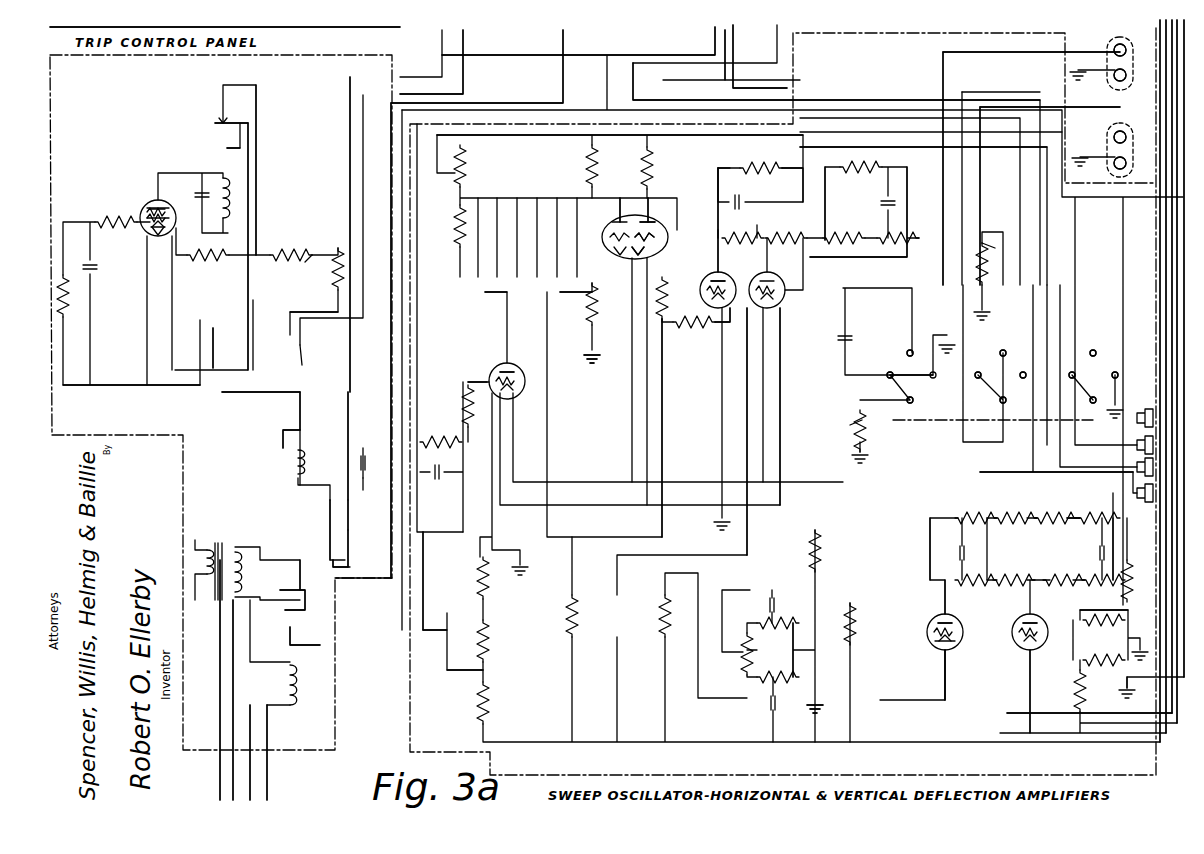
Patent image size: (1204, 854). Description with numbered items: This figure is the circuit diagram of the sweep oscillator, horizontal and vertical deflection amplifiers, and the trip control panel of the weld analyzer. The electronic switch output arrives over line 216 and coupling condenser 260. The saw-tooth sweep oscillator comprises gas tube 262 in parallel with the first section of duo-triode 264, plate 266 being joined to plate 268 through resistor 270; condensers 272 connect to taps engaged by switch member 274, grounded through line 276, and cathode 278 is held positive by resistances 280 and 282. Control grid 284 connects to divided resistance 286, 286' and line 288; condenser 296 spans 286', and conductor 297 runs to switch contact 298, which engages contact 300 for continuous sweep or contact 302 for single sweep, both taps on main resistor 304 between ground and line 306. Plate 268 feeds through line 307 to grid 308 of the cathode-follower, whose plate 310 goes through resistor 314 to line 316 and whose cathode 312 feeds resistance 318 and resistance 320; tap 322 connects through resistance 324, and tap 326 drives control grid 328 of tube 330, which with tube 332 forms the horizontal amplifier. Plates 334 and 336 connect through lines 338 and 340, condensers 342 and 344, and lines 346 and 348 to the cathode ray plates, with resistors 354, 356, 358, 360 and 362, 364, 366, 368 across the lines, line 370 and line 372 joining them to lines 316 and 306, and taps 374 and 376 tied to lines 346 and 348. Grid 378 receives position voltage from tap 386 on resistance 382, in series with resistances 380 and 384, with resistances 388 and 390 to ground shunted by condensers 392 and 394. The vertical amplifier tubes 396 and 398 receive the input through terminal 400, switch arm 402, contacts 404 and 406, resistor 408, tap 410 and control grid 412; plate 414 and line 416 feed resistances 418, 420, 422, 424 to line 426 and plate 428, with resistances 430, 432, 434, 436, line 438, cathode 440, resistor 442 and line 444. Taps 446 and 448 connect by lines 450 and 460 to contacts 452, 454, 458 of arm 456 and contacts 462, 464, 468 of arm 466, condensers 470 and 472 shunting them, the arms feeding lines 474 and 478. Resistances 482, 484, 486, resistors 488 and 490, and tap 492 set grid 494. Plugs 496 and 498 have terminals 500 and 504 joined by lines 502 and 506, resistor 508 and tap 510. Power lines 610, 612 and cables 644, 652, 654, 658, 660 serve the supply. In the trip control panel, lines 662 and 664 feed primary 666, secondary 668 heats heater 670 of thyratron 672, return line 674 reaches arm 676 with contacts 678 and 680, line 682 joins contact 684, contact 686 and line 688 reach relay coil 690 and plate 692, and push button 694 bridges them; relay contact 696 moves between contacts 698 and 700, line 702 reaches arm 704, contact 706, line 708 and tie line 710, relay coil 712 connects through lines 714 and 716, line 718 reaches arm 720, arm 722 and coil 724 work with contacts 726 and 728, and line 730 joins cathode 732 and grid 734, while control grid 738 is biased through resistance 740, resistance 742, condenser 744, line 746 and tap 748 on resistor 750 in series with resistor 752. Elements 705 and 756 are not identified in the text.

The line 216 is at (275, 27).
The coupling condenser 260 is at (850, 335).
The gas tube 262 is at (500, 370).
The duo-triode 264 is at (650, 215).
The plate 266 is at (527, 381).
The plate 268 is at (620, 215).
The resistor 270 is at (460, 230).
The condensers 272 is at (470, 165).
The variable position switch member 274 is at (490, 295).
The line 276 is at (560, 295).
The cathode 278 is at (593, 305).
The resistance 280 is at (590, 320).
The resistance 282 is at (590, 170).
The control grid 284 is at (487, 381).
The divided resistance 286 is at (458, 390).
The divided resistance portion 286' is at (441, 427).
The line 288 is at (565, 42).
The condenser 296 is at (436, 480).
The conductor 297 is at (423, 548).
The movable switch contact 298 is at (460, 660).
The stationary contact 300 is at (447, 625).
The stationary contact 302 is at (460, 670).
The main resistor 304 is at (485, 660).
The line 306 is at (498, 742).
The line 307 is at (668, 237).
The grid 308 is at (660, 240).
The plate 310 is at (656, 222).
The cathode 312 is at (650, 252).
The resistor 314 is at (645, 165).
The line 316 is at (660, 135).
The resistance 318 is at (663, 340).
The resistance 320 is at (570, 620).
The adjustable tap 322 is at (695, 325).
The resistance 324 is at (722, 325).
The adjustable tap 326 is at (690, 312).
The control grid 328 is at (705, 290).
The tube 330 is at (720, 255).
The tube 332 is at (775, 320).
The plate 334 is at (722, 280).
The plate 336 is at (785, 282).
The line 338 is at (716, 215).
The line 340 is at (910, 147).
The condenser 342 is at (735, 200).
The condenser 344 is at (888, 198).
The line 346 is at (712, 45).
The line 348 is at (706, 58).
The resistor 354 is at (728, 168).
The resistor 356 is at (758, 168).
The resistor 358 is at (825, 190).
The resistor 360 is at (880, 167).
The resistance 362 is at (745, 238).
The resistance 364 is at (815, 226).
The resistance 366 is at (845, 238).
The resistance 368 is at (880, 257).
The conductive line 370 is at (803, 160).
The line 372 is at (812, 712).
The adjustable tap 374 is at (758, 230).
The adjustable tap 376 is at (890, 238).
The grid 378 is at (748, 312).
The resistance 380 is at (812, 548).
The resistance 382 is at (775, 628).
The resistance 384 is at (663, 640).
The adjustable tap 386 is at (745, 655).
The resistance 388 is at (793, 630).
The resistance 390 is at (780, 675).
The shunt condenser 392 is at (770, 598).
The shunt condenser 394 is at (770, 708).
The tube 396 is at (935, 650).
The tube 398 is at (1032, 665).
The stationary terminal 400 is at (900, 380).
The movable switch arm 402 is at (913, 403).
The contact 404 is at (906, 353).
The contact 406 is at (892, 367).
The resistor 408 is at (863, 430).
The variable tap 410 is at (852, 422).
The control grid 412 is at (935, 632).
The plate 414 is at (945, 620).
The line 416 is at (945, 600).
The resistance 418 is at (945, 580).
The resistance 420 is at (960, 642).
The resistance 422 is at (1020, 580).
The resistance 424 is at (1114, 560).
The line 426 is at (1095, 582).
The plate 428 is at (1032, 622).
The resistance 430 is at (965, 515).
The resistance 432 is at (1000, 515).
The resistance 434 is at (1045, 515).
The resistance 436 is at (1098, 515).
The line 438 is at (1025, 450).
The cathode 440 is at (947, 660).
The resistor 442 is at (850, 600).
The line 444 is at (1005, 725).
The adjustable tap 446 is at (980, 582).
The adjustable tap 448 is at (1072, 566).
The line 450 is at (988, 540).
The stationary switch contact 452 is at (978, 372).
The stationary switch contact 454 is at (1000, 353).
The movable switch arm 456 is at (1004, 397).
The stationary contact 458 is at (1022, 370).
The line 460 is at (1080, 520).
The stationary contact 462 is at (1072, 372).
The stationary contact 464 is at (1093, 350).
The movable switch arm 466 is at (1093, 397).
The contact 468 is at (1115, 372).
The condenser 470 is at (960, 550).
The condenser 472 is at (1100, 548).
The line 474 is at (734, 60).
The line 478 is at (727, 45).
The resistance 482 is at (1140, 576).
The resistance 484 is at (1080, 625).
The resistance 486 is at (1084, 700).
The resistor 488 is at (1114, 610).
The resistor 490 is at (1084, 672).
The adjustable tap 492 is at (1083, 655).
The grid 494 is at (1022, 640).
The connector plug 496 is at (1114, 80).
The connector plug 498 is at (1114, 160).
The terminal 500 is at (1114, 48).
The line 502 is at (975, 52).
The terminal 504 is at (1114, 133).
The line 506 is at (982, 107).
The resistor 508 is at (984, 270).
The adjustable tap 510 is at (992, 250).
The input line 610 is at (350, 722).
The input line 612 is at (350, 680).
The power supply cable 644 is at (1184, 118).
The negative power lead 652 is at (1172, 85).
The intermediate cable lead 654 is at (1177, 100).
The line 658 is at (1166, 40).
The line 660 is at (1160, 28).
The power line 662 is at (220, 780).
The power line 664 is at (233, 763).
The primary 666 is at (236, 600).
The secondary 668 is at (208, 574).
The heater element 670 is at (158, 236).
The thyratron tube 672 is at (157, 195).
The return line 674 is at (465, 40).
The movable switch arm 676 is at (330, 520).
The fixed contact 678 is at (349, 540).
The fixed contact 680 is at (350, 565).
The line 682 is at (349, 515).
The stationary contact 684 is at (352, 492).
The stationary contact 686 is at (349, 440).
The line 688 is at (338, 275).
The relay coil 690 is at (232, 195).
The plate 692 is at (202, 190).
The push button switch 694 is at (364, 455).
The movable relay contact 696 is at (215, 120).
The stationary contact 698 is at (222, 118).
The stationary contact 700 is at (226, 141).
The line 702 is at (249, 155).
The movable switch arm 704 is at (308, 607).
The conductor 705 is at (300, 470).
The stationary contact 706 is at (292, 645).
The line 708 is at (340, 578).
The tie line 710 is at (300, 560).
The relay coil 712 is at (292, 700).
The line 714 is at (250, 775).
The line 716 is at (268, 788).
The line 718 is at (257, 100).
The movable switch arm 720 is at (302, 395).
The movable switch arm 722 is at (302, 365).
The relay coil 724 is at (300, 465).
The stationary contact 726 is at (290, 425).
The stationary contact 728 is at (302, 390).
The line 730 is at (214, 340).
The cathode 732 is at (151, 227).
The grid 734 is at (147, 208).
The control grid 738 is at (147, 218).
The resistance 740 is at (112, 222).
The resistance 742 is at (64, 315).
The condenser 744 is at (92, 275).
The line 746 is at (115, 385).
The adjustable tap 748 is at (325, 305).
The resistor 750 is at (338, 256).
The resistor 752 is at (310, 250).
The resistor 756 is at (205, 258).